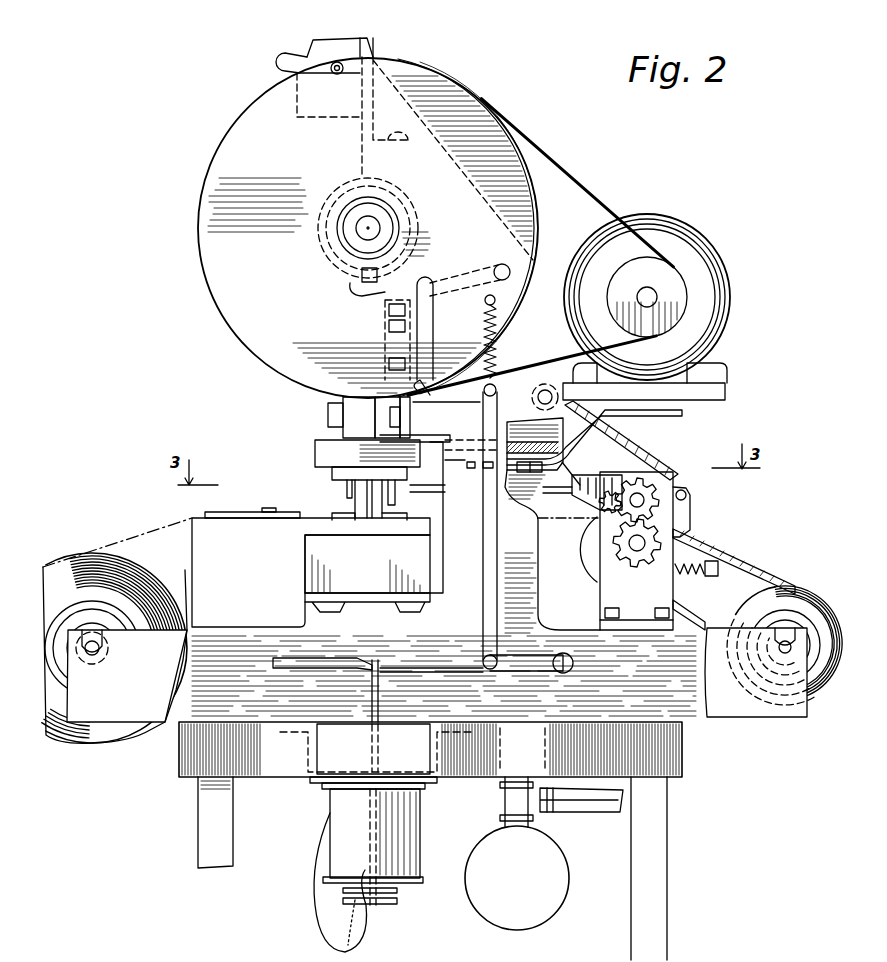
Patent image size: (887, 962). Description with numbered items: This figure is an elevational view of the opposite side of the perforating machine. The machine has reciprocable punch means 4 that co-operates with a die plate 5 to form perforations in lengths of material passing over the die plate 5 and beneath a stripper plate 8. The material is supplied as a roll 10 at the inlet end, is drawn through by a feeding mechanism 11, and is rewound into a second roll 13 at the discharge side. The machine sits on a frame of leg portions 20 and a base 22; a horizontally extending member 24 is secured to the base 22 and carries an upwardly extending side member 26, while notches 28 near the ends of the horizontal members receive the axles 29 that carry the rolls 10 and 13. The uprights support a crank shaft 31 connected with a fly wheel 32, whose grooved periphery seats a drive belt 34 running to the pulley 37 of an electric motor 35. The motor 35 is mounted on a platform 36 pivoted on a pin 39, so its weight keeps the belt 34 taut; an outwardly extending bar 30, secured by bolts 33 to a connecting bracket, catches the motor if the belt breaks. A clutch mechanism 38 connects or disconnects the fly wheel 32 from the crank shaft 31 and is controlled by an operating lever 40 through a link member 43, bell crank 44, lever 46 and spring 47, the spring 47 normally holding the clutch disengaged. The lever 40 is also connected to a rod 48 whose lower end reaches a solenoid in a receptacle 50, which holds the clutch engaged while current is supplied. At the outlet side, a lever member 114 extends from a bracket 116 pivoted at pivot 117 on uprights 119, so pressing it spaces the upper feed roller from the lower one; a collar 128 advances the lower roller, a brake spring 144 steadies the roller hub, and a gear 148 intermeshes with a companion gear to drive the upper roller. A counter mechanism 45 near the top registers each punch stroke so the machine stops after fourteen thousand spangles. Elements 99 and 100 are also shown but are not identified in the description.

The reciprocable punch means 4 is at (332, 491).
The die plate 5 is at (242, 530).
The stripper plate 8 is at (240, 511).
The roll 10 is at (64, 560).
The feeding mechanism 11 is at (709, 525).
The second roll 13 is at (798, 592).
The leg portions 20 is at (200, 830).
The base 22 is at (684, 760).
The horizontally extending member 24 is at (175, 722).
The side member 26 is at (524, 554).
The notches 28 is at (100, 645).
The axles 29 is at (95, 657).
The bar 30 is at (685, 413).
The crank shaft 31 is at (356, 228).
The fly wheel 32 is at (222, 161).
The bolts 33 is at (458, 479).
The drive belt 34 is at (580, 190).
The electric motor 35 is at (706, 245).
The platform 36 is at (727, 390).
The pulley 37 is at (660, 300).
The clutch mechanism 38 is at (362, 297).
The pin 39 is at (536, 396).
The operating lever 40 is at (322, 657).
The link member 43 is at (483, 585).
The bell crank 44 is at (416, 280).
The counter mechanism 45 is at (352, 45).
The lever 46 is at (498, 266).
The spring 47 is at (498, 358).
The rod 48 is at (380, 702).
The receptacle 50 is at (405, 834).
The float ball 99 is at (544, 853).
The bag 100 is at (312, 890).
The lever member 114 is at (568, 503).
The bracket 116 is at (598, 480).
The pivot 117 is at (606, 505).
The uprights 119 is at (606, 600).
The collar 128 is at (768, 645).
The spring 144 is at (690, 577).
The gear 148 is at (655, 492).